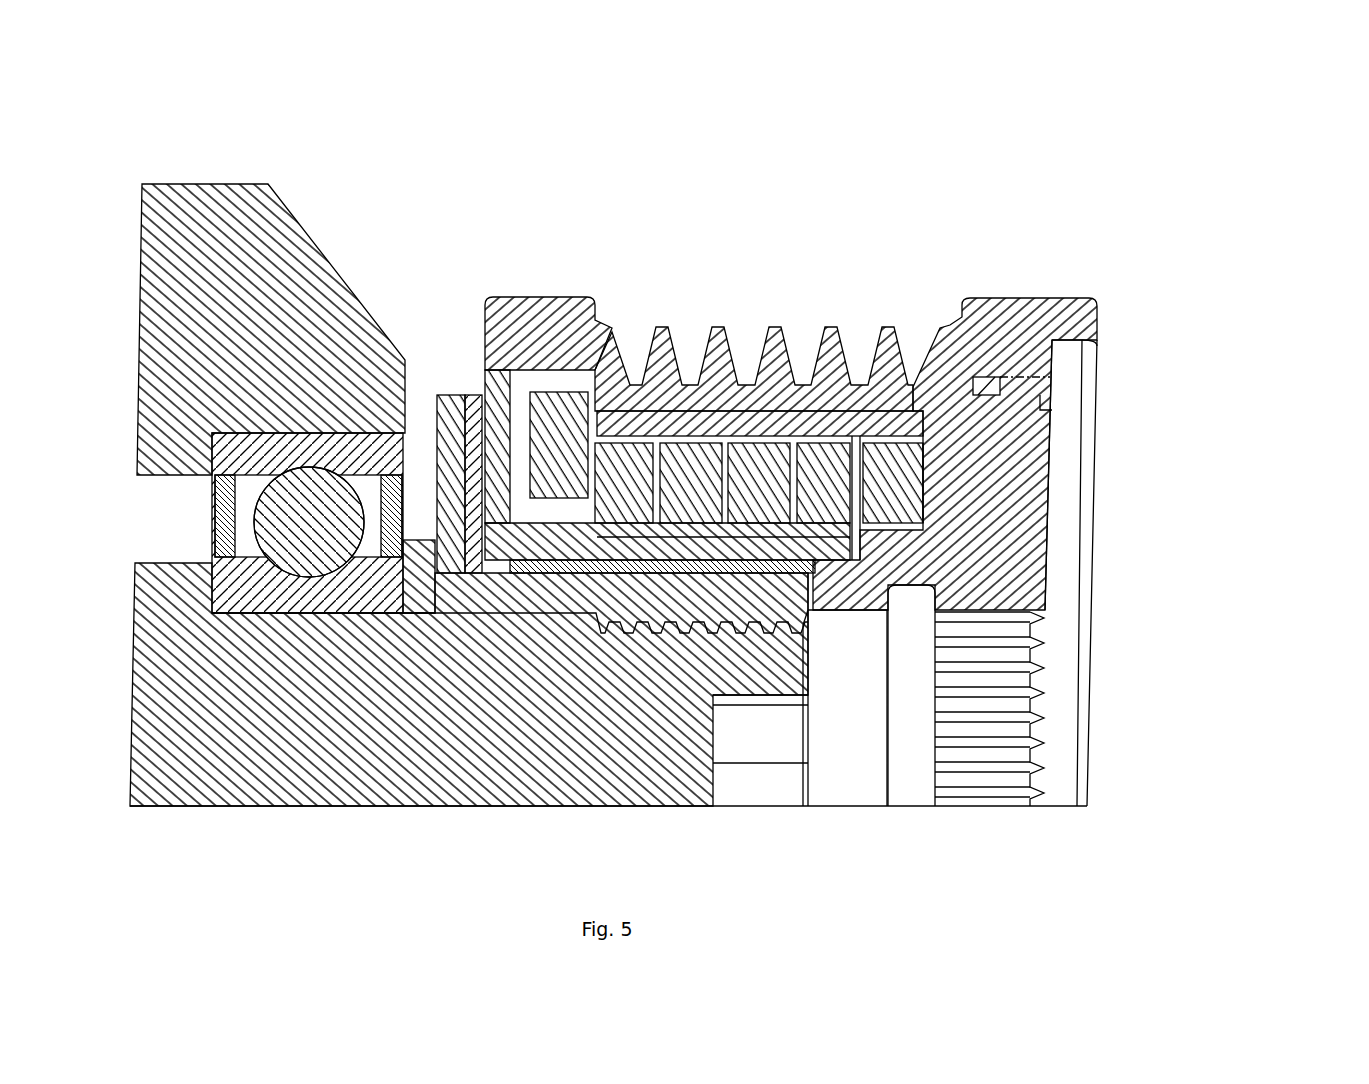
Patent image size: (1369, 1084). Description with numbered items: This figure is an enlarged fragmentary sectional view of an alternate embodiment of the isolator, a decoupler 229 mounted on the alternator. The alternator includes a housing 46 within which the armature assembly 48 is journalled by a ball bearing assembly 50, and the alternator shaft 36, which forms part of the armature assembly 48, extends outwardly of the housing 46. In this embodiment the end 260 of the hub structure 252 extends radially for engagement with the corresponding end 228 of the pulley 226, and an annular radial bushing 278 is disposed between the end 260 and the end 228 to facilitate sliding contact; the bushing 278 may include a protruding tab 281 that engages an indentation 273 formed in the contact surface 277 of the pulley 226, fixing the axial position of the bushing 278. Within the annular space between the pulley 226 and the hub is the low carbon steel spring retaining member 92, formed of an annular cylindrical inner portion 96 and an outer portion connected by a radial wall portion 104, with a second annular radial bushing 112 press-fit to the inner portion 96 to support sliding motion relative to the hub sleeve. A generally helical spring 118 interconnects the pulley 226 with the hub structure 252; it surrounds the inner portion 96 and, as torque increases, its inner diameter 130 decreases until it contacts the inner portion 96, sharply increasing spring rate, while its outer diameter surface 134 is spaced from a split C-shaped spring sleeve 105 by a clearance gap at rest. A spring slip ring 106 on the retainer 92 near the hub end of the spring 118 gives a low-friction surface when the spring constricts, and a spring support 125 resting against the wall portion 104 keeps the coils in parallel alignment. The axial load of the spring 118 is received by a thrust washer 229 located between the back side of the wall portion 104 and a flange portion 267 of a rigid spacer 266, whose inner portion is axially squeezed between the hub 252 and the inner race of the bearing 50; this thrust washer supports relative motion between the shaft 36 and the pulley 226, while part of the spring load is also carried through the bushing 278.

The shaft 36 is at (720, 672).
The housing 46 is at (210, 207).
The armature assembly 48 is at (180, 753).
The bearings 50 is at (328, 597).
The spring retaining member 92 is at (495, 590).
The inner portion 96 is at (617, 540).
The radial wall portion 104 is at (480, 395).
The spring sleeve 105 is at (656, 418).
The spring slip ring 106 is at (772, 530).
The second annular radial bushing 112 is at (803, 583).
The helical spring 118 is at (760, 470).
The spring support 125 is at (523, 433).
The inner diameter 130 is at (697, 518).
The outer diameter surface 134 is at (695, 443).
The pulley 226 is at (1072, 310).
The end of the pulley 228 is at (1015, 333).
The decoupler 229 is at (450, 395).
The hub structure 252 is at (1047, 527).
The end of the hub structure 260 is at (1018, 512).
The rigid spacer 266 is at (413, 600).
The flange portion 267 is at (437, 430).
The indentation 273 is at (1012, 377).
The contact surface 277 is at (988, 377).
The radial bushing 278 is at (1057, 387).
The protruding tab 281 is at (1045, 397).